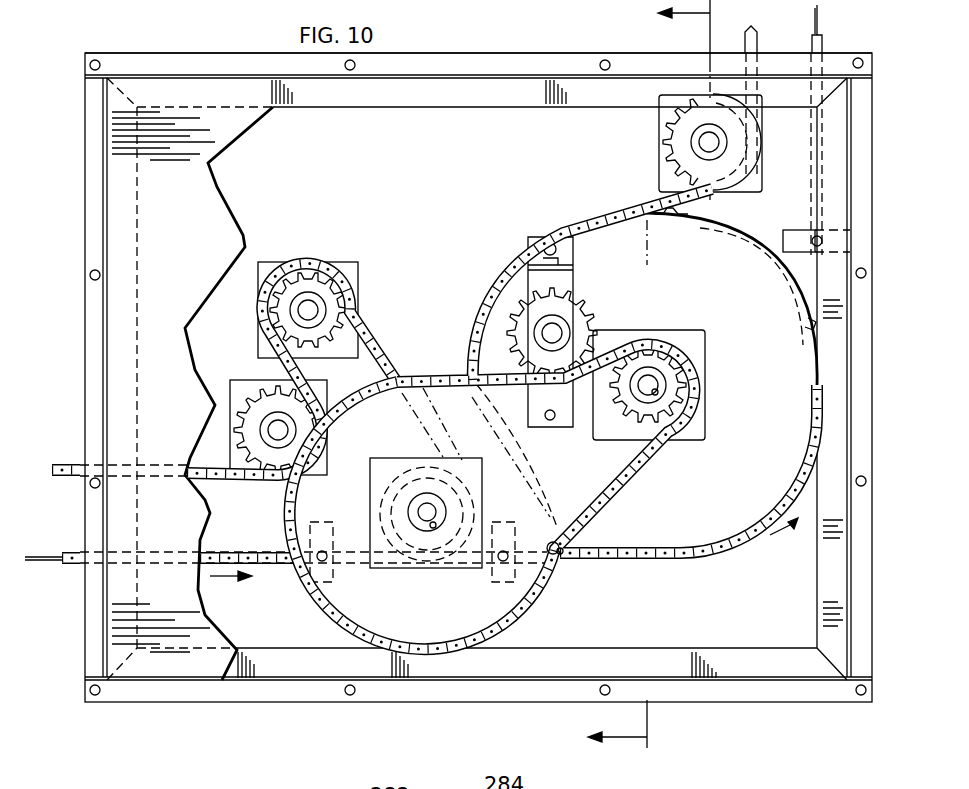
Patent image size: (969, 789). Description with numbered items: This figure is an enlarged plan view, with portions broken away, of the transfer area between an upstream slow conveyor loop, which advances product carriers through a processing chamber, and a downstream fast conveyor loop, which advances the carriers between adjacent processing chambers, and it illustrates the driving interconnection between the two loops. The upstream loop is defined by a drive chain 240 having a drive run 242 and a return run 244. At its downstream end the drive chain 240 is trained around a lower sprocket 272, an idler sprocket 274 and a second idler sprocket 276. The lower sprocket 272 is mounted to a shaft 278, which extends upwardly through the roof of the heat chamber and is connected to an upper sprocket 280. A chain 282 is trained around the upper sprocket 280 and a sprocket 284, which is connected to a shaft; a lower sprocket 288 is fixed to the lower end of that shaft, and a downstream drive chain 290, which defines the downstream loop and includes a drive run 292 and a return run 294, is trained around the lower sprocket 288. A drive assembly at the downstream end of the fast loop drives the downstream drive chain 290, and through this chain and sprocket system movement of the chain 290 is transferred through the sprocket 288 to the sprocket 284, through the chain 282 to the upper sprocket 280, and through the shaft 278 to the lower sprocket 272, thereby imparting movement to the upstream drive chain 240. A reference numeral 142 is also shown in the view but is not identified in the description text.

The shaft 142 is at (821, 22).
The drive chain 240 is at (40, 436).
The drive run 242 is at (70, 552).
The return run 244 is at (73, 472).
The lower sprocket 272 is at (391, 478).
The idler sprocket 274 is at (355, 315).
The idler sprocket 276 is at (260, 383).
The shaft 278 is at (432, 527).
The upper sprocket 280 is at (557, 556).
The chain 282 is at (563, 556).
The sprocket 284 is at (640, 443).
The lower sprocket 288 is at (733, 239).
The downstream drive chain 290 is at (788, 8).
The drive run 292 is at (825, 44).
The return run 294 is at (756, 47).